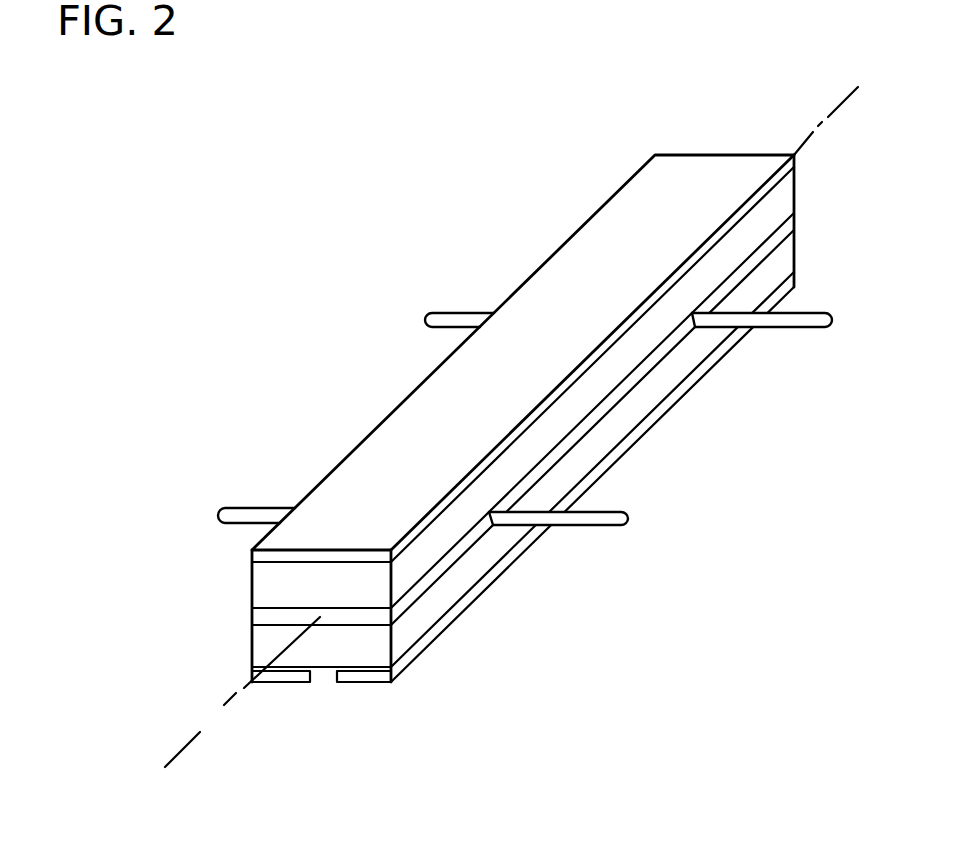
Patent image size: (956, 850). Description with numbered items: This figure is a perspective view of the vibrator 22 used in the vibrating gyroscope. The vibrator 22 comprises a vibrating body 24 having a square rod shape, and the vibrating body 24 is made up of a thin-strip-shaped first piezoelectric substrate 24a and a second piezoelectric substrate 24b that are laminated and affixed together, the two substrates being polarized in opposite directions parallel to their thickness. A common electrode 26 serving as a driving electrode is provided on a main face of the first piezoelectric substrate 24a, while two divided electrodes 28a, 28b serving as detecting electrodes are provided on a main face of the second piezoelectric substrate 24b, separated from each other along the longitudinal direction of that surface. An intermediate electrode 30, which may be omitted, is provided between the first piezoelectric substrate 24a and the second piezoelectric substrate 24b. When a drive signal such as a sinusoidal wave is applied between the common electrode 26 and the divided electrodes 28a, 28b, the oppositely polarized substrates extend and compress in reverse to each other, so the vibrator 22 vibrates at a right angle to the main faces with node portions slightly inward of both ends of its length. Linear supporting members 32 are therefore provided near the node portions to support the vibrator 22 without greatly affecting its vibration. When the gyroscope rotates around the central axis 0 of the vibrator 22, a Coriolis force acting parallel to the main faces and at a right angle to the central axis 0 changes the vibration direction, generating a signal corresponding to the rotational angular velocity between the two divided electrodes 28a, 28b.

The vibrator 22 is at (590, 223).
The vibrating body 24 is at (243, 566).
The first piezoelectric substrate 24a is at (263, 588).
The second piezoelectric substrate 24b is at (263, 643).
The common electrode 26 is at (423, 407).
The divided electrode 28a is at (367, 675).
The divided electrode 28b is at (291, 675).
The intermediate electrode 30 is at (263, 615).
The supporting member 32 is at (438, 317).
The central axis 0 is at (507, 427).